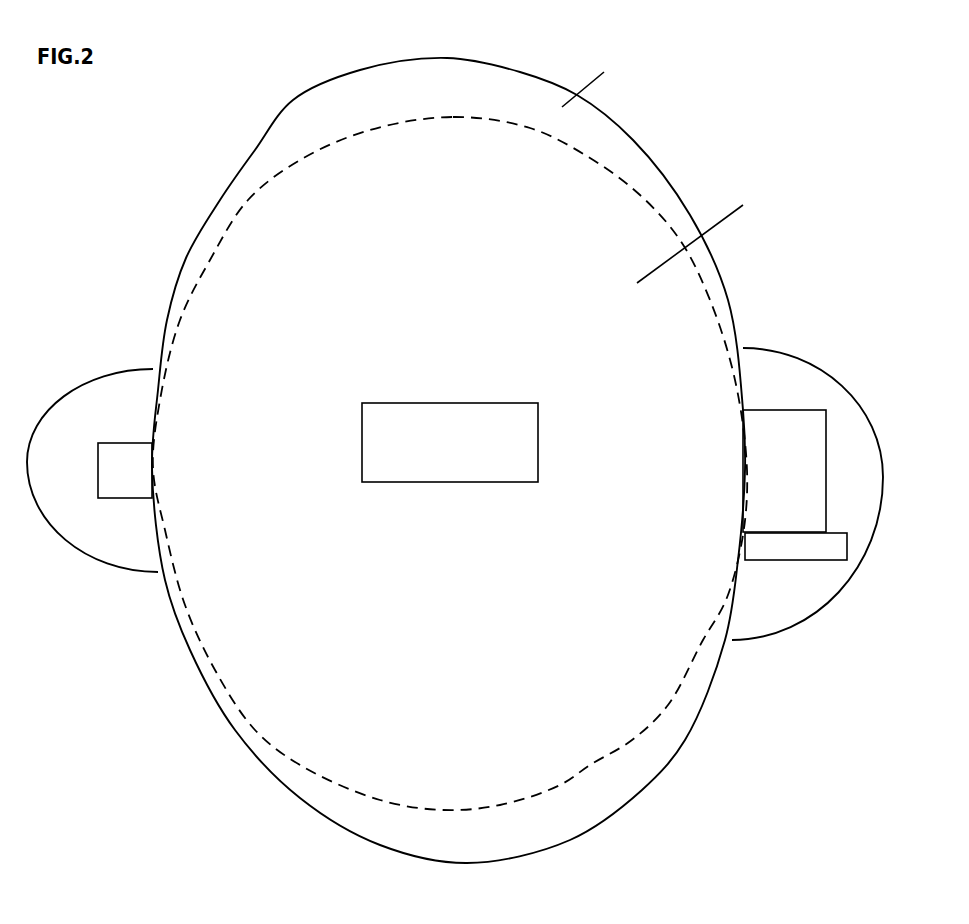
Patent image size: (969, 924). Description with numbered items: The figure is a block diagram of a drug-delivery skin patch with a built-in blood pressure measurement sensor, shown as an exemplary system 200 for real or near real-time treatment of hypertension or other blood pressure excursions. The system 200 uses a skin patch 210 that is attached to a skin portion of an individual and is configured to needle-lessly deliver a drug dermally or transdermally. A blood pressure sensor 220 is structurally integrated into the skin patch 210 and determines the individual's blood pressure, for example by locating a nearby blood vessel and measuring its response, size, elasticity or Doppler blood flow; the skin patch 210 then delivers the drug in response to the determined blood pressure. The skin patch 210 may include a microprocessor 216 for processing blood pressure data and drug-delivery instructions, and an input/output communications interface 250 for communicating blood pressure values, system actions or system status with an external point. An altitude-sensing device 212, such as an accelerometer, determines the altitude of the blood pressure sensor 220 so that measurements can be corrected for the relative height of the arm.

The system 200 is at (89, 117).
The skin patch 210 is at (397, 107).
The altitude-sensing device 212 is at (141, 479).
The microprocessor 216 is at (801, 481).
The blood pressure sensor 220 is at (467, 462).
The input/output communications interface 250 is at (813, 556).